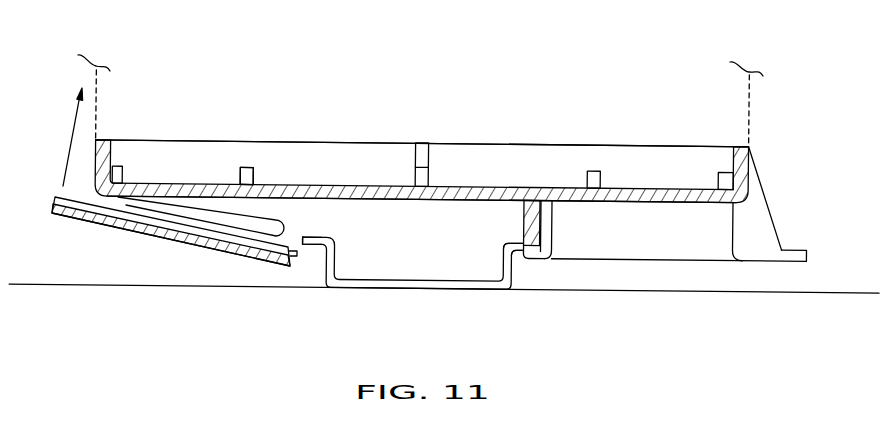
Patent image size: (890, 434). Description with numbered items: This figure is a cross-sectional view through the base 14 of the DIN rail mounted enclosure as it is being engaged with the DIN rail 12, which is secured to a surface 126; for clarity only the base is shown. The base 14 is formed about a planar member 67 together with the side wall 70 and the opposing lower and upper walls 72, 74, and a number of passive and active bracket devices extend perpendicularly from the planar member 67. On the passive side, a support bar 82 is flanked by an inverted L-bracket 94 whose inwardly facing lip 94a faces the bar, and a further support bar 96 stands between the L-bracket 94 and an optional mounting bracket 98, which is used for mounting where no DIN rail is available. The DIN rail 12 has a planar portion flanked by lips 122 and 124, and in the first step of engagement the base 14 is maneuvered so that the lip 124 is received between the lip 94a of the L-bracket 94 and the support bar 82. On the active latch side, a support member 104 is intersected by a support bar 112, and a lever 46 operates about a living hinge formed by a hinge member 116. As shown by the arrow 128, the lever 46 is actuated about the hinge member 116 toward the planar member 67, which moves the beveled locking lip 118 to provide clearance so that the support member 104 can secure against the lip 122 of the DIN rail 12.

The DIN rail 12 is at (393, 285).
The base 14 is at (796, 201).
The lever 46 is at (150, 228).
The planar member 67 is at (337, 185).
The side wall 70 is at (293, 150).
The lower wall 72 is at (117, 141).
The upper wall 74 is at (750, 166).
The support bar 82 is at (528, 217).
The L-bracket 94 is at (655, 205).
The lip 94a is at (533, 258).
The support bar 96 is at (703, 252).
The mounting bracket 98 is at (793, 250).
The support member 104 is at (395, 202).
The support bar 112 is at (213, 207).
The hinge member 116 is at (289, 196).
The beveled locking lip 118 is at (295, 262).
The lip 122 is at (317, 240).
The lip 124 is at (517, 240).
The surface 126 is at (675, 293).
The arrow 128 is at (70, 147).